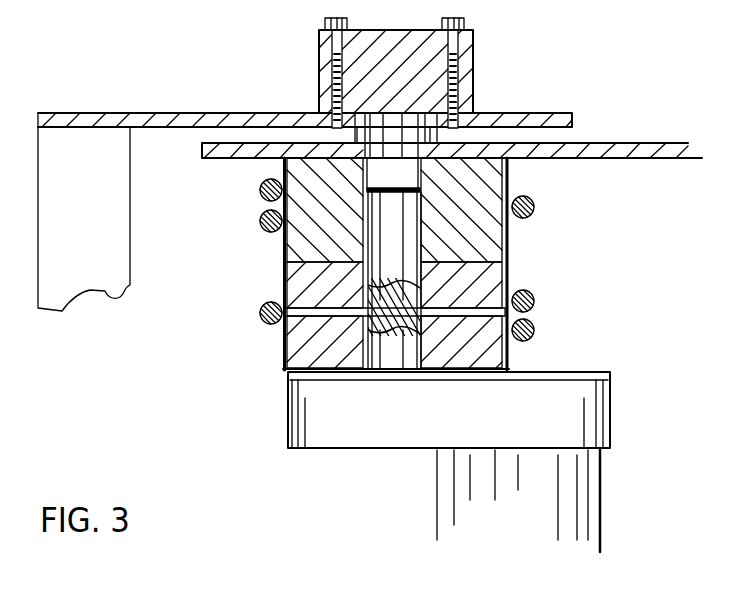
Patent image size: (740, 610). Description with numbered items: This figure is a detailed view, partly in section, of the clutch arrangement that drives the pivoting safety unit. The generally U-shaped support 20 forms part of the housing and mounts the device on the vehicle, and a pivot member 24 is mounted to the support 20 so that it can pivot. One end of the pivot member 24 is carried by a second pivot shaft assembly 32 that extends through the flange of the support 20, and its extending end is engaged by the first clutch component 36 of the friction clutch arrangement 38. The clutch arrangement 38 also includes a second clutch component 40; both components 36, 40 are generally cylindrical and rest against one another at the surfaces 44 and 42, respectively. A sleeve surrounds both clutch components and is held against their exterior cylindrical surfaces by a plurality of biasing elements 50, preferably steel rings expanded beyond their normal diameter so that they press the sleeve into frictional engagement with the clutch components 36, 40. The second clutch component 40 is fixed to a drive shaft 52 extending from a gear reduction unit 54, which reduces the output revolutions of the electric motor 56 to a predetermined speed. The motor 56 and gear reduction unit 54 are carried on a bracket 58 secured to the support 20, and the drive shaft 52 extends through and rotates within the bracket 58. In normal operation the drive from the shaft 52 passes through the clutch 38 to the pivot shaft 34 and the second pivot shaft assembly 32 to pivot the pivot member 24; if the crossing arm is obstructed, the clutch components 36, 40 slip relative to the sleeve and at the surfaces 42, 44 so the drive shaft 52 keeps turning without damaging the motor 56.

The support 20 is at (657, 150).
The pivot member 24 is at (263, 124).
The second pivot shaft assembly 32 is at (452, 136).
The pivot shaft 34 is at (472, 80).
The first clutch component 36 is at (359, 218).
The friction clutch arrangement 38 is at (532, 270).
The second clutch component 40 is at (492, 352).
The surface 42 is at (283, 249).
The surface 44 is at (285, 285).
The biasing elements 50 is at (260, 321).
The drive shaft 52 is at (416, 370).
The gear reduction unit 54 is at (596, 424).
The electric motor 56 is at (592, 497).
The bracket 58 is at (598, 372).